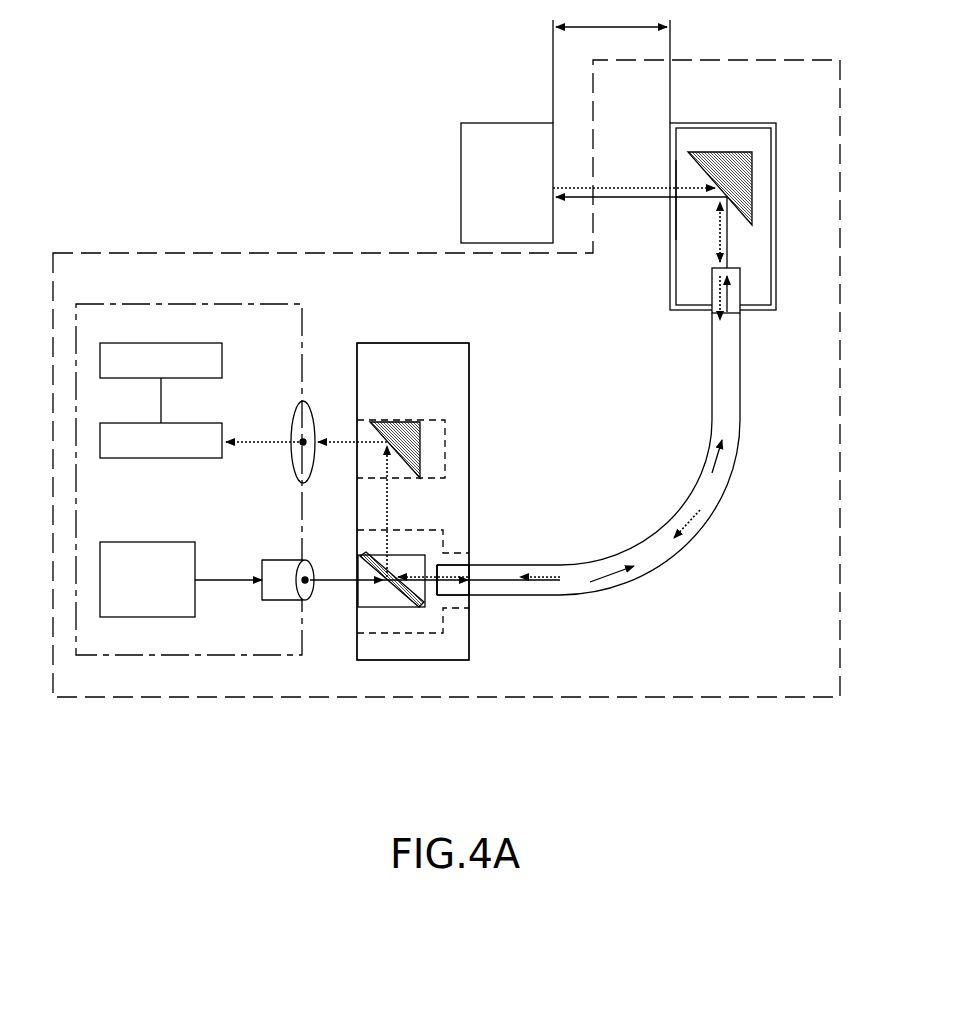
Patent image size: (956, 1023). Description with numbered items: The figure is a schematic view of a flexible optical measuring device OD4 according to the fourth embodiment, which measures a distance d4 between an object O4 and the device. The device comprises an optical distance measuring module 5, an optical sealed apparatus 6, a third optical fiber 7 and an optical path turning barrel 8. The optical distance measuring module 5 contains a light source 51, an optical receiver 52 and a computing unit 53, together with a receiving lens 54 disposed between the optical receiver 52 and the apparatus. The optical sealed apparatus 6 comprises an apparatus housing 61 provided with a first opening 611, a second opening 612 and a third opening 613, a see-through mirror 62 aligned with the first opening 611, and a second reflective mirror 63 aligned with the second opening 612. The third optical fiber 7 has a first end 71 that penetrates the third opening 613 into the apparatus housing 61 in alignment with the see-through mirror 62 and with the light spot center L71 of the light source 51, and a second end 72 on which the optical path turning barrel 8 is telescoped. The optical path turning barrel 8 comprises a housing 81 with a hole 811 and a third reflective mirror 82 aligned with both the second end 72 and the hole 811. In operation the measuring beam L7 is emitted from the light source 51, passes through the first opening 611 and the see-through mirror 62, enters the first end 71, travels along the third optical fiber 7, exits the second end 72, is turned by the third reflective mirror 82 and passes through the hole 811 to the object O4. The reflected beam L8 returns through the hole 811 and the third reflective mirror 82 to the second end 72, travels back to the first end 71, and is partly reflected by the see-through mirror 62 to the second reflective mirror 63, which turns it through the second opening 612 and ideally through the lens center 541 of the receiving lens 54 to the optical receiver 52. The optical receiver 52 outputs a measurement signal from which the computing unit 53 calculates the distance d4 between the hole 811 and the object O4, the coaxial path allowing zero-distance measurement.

The flexible optical measuring device OD4 is at (197, 148).
The distance d4 is at (611, 63).
The object O4 is at (503, 123).
The optical path turning barrel 8 is at (700, 123).
The housing 81 is at (723, 216).
The hole 811 is at (673, 170).
The third reflective mirror 82 is at (745, 180).
The second end 72 is at (730, 268).
The third optical fiber 7 is at (665, 565).
The first end 71 is at (437, 580).
The optical distance measuring module 5 is at (122, 304).
The light source 51 is at (160, 542).
The optical receiver 52 is at (132, 423).
The computing unit 53 is at (190, 343).
The receiving lens 54 is at (295, 410).
The lens center 541 is at (303, 446).
The light spot center L71 is at (308, 585).
The optical sealed apparatus 6 is at (415, 343).
The apparatus housing 61 is at (413, 501).
The first opening 611 is at (357, 565).
The second opening 612 is at (357, 430).
The third opening 613 is at (470, 562).
The see-through mirror 62 is at (408, 595).
The second reflective mirror 63 is at (403, 430).
The measuring beam L7 is at (620, 575).
The reflected beam L8 is at (690, 518).